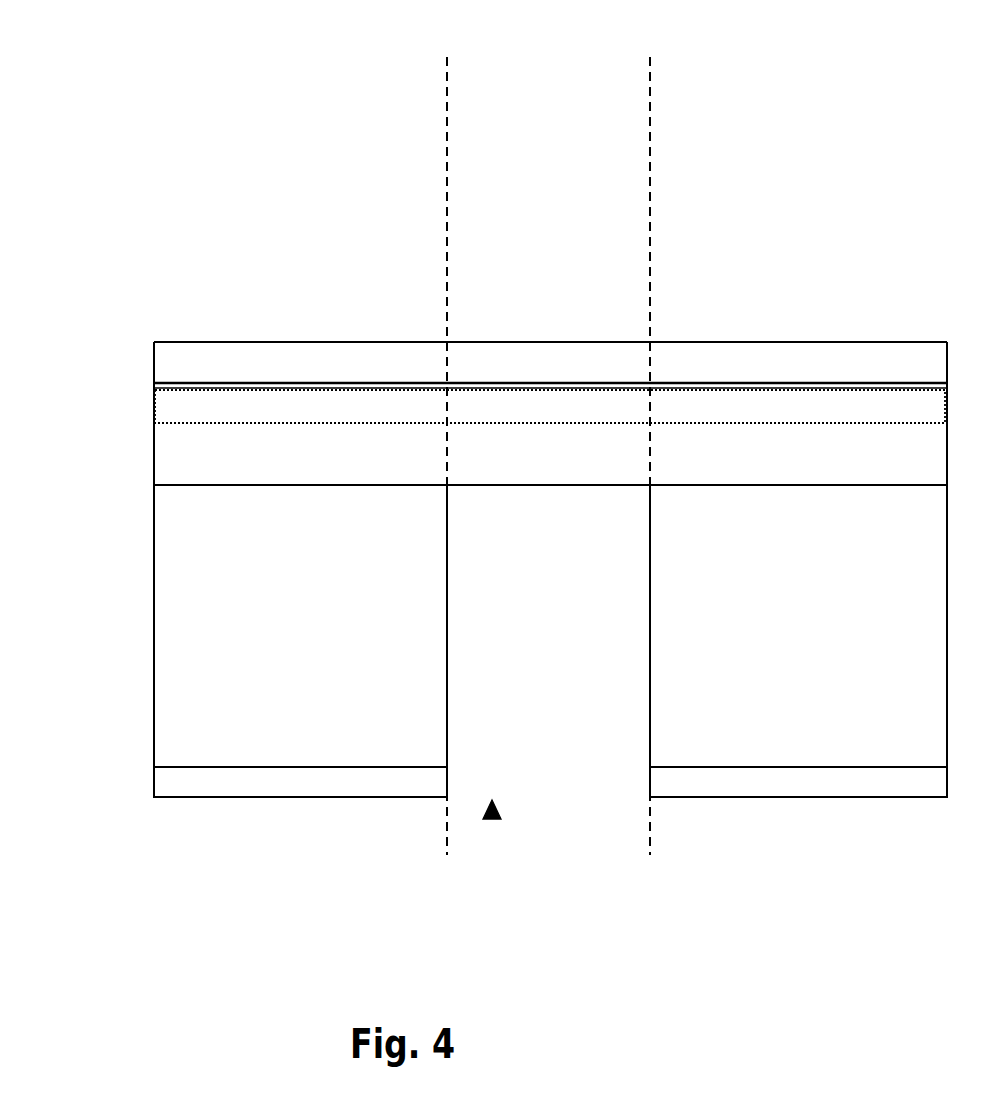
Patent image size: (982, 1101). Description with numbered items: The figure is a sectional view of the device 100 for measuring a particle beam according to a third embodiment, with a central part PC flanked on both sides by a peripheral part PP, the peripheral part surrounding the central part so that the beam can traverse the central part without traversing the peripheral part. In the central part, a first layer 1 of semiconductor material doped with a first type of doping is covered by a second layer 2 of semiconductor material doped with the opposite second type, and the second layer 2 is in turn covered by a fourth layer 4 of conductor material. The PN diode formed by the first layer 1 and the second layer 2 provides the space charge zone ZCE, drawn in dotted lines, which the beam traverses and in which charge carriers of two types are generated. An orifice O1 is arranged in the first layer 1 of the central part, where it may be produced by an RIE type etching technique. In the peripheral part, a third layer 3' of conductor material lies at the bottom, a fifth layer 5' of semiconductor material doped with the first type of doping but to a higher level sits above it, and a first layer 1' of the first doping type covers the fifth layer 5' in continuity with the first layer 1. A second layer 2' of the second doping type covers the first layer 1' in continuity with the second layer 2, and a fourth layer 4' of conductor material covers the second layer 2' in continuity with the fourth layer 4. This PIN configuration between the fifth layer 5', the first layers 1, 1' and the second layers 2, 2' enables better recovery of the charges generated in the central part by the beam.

The device 100 is at (125, 53).
The first layer 1 is at (697, 368).
The first layer 1' is at (239, 423).
The second layer 2 is at (697, 316).
The second layer 2' is at (300, 316).
The third layer 3' is at (292, 862).
The fourth layer 4 is at (697, 296).
The fourth layer 4' is at (300, 302).
The fifth layer 5' is at (239, 623).
The orifice O1 is at (492, 812).
The space charge zone ZCE is at (595, 408).